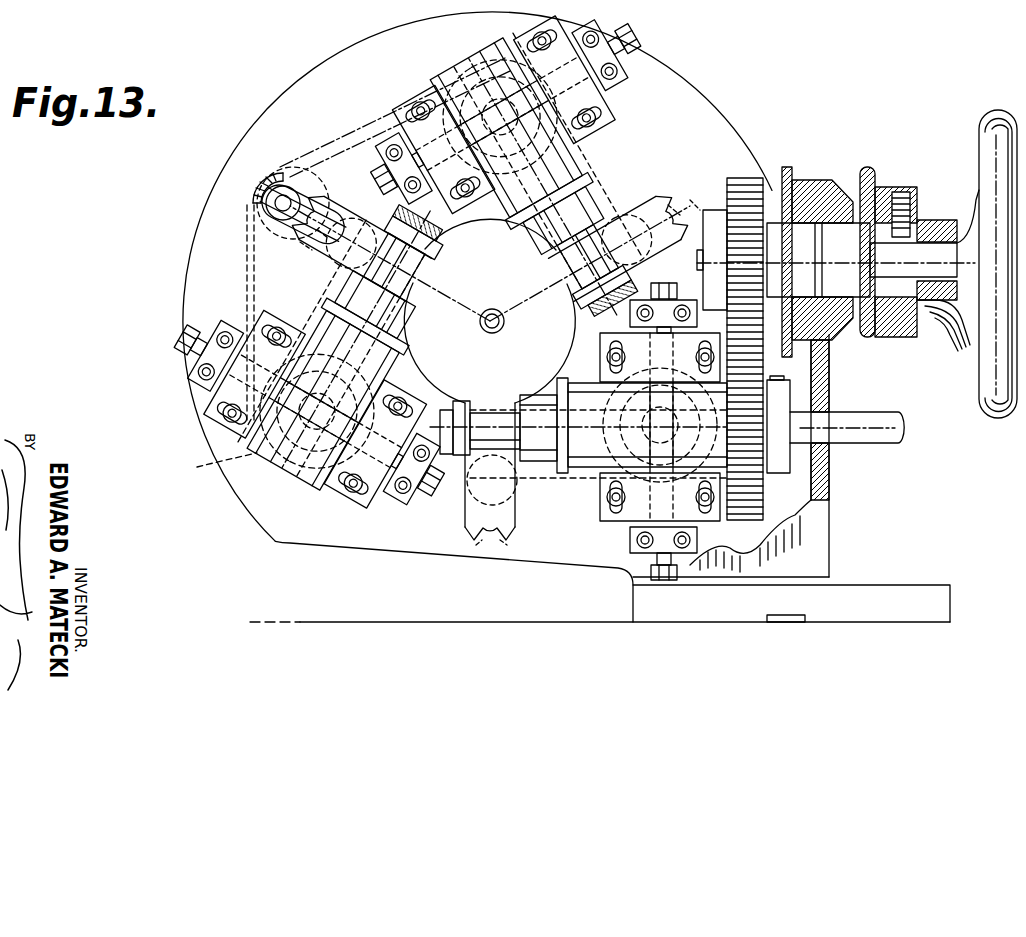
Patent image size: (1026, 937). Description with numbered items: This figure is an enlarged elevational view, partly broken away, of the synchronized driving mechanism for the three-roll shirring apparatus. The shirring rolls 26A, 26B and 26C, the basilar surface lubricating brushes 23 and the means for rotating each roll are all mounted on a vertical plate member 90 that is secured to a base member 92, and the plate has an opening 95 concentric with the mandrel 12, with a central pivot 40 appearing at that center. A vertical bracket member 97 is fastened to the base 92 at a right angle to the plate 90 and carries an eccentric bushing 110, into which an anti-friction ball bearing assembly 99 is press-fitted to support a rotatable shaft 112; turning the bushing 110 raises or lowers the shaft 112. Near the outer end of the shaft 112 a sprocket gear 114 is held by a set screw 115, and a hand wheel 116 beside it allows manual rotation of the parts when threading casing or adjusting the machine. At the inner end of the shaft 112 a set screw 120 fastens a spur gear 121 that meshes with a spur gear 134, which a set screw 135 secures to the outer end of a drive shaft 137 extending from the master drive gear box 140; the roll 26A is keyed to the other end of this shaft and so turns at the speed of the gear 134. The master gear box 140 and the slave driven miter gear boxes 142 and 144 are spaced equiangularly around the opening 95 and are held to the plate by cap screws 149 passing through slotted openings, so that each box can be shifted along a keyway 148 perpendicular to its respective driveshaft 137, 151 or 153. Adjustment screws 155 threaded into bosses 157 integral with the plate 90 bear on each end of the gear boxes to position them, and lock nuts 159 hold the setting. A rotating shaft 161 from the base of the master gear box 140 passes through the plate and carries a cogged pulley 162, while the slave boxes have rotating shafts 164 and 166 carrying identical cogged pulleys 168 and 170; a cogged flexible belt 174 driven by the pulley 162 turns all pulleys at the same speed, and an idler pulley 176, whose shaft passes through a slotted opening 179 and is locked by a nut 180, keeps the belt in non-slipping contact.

The mandrel 12 is at (491, 308).
The basilar surface lubricating brushes 23 is at (482, 528).
The shirring roll 26A is at (508, 525).
The shirring roll 26B is at (668, 203).
The shirring roll 26C is at (350, 262).
The center pivot 40 is at (503, 329).
The vertical plate member 90 is at (358, 532).
The base member 92 is at (650, 605).
The opening 95 is at (481, 262).
The vertical bracket member 97 is at (790, 545).
The anti-friction ball bearing assembly 99 is at (838, 240).
The eccentric bushing 110 is at (800, 180).
The rotatable shaft 112 is at (932, 280).
The sprocket gear 114 is at (872, 185).
The set screw 115 is at (905, 215).
The hand wheel 116 is at (985, 138).
The set screw 120 is at (712, 210).
The spur gear 121 is at (745, 205).
The spur gear 134 is at (740, 460).
The set screw 135 is at (780, 378).
The drive shaft 137 is at (875, 420).
The master drive gear box 140 is at (594, 452).
The slave driven miter gear box 142 is at (326, 334).
The slave driven miter gear box 144 is at (570, 178).
The keyway 148 is at (598, 100).
The cap screws 149 is at (415, 120).
The driveshaft 151 is at (420, 270).
The driveshaft 153 is at (590, 285).
The adjustment screws 155 is at (636, 48).
The internally threaded bosses 157 is at (620, 76).
The lock nuts 159 is at (616, 52).
The rotating shaft 161 is at (620, 405).
The cogged pulley 162 is at (603, 398).
The rotating shaft 164 is at (275, 443).
The rotating shaft 166 is at (480, 90).
The cogged pulley 168 is at (226, 466).
The cogged pulley 170 is at (488, 75).
The cogged flexible belt 174 is at (312, 158).
The idler pulley 176 is at (247, 258).
The slotted opening 179 is at (262, 200).
The nut 180 is at (280, 190).